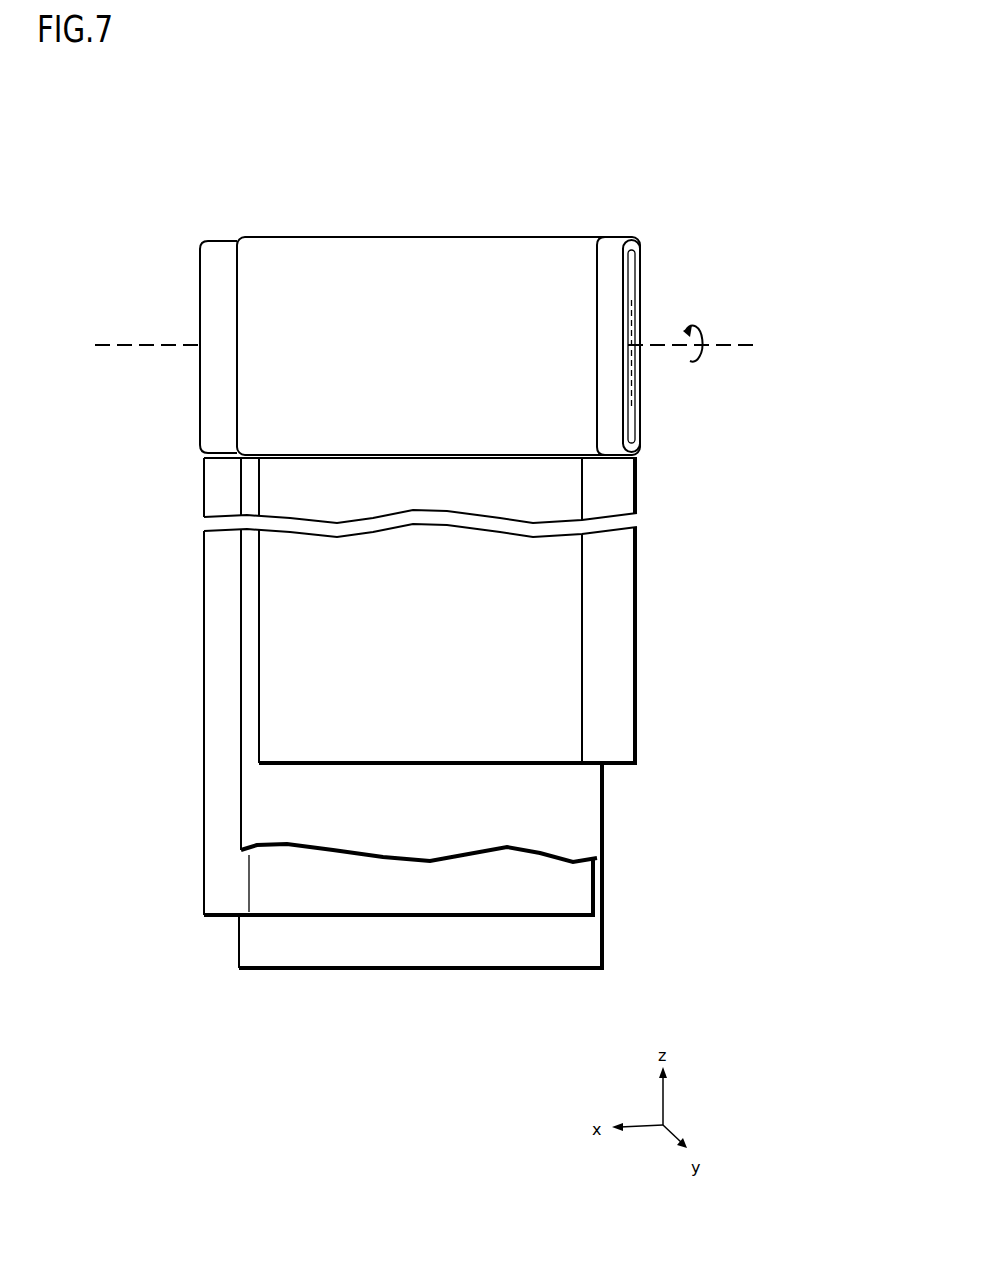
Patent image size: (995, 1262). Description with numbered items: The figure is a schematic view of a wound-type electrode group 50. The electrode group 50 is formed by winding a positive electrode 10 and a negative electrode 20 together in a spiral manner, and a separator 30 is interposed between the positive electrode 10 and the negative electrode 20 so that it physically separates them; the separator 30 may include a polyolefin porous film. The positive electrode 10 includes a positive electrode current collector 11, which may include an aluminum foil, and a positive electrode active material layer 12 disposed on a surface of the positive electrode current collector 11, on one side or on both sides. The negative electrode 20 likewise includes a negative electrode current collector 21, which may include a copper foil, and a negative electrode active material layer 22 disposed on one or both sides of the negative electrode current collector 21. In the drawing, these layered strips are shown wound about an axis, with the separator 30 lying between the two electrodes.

The electrode group 50 is at (180, 190).
The positive electrode 10 is at (525, 611).
The positive electrode current collector 11 is at (618, 683).
The positive electrode active material layer 12 is at (537, 598).
The negative electrode 20 is at (314, 686).
The negative electrode current collector 21 is at (206, 808).
The negative electrode active material layer 22 is at (290, 895).
The separator 30 is at (237, 958).